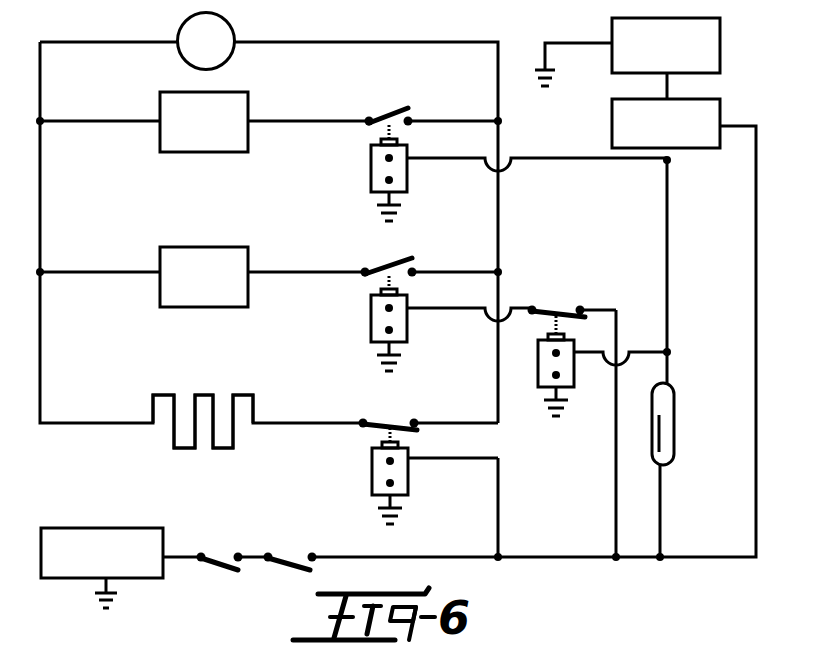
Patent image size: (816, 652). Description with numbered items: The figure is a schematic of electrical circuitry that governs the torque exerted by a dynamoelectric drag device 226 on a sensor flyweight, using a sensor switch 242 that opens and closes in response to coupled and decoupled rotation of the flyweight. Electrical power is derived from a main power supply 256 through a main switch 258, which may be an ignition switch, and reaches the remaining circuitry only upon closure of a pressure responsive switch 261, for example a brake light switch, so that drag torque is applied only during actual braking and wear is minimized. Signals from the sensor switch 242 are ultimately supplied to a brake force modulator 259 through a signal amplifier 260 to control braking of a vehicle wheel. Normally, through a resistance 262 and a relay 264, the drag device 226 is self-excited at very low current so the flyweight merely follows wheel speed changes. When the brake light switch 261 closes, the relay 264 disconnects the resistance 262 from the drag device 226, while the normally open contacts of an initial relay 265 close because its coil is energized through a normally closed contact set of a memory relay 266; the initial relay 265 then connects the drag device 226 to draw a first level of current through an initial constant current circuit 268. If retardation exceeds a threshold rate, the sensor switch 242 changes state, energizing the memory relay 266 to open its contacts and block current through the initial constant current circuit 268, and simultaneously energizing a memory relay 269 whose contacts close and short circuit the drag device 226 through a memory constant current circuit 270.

The dynamoelectric drag device 226 is at (183, 32).
The memory constant current circuit 270 is at (185, 152).
The initial constant current circuit 268 is at (185, 307).
The resistance 262 is at (201, 395).
The memory relay 269 is at (386, 120).
The initial relay 265 is at (381, 271).
The relay 264 is at (386, 424).
The memory relay 266 is at (545, 308).
The sensor switch 242 is at (676, 420).
The brake force modulator 259 is at (620, 72).
The signal amplifier 260 is at (626, 148).
The main power supply 256 is at (127, 528).
The main switch 258 is at (228, 528).
The pressure responsive switch 261 is at (272, 555).